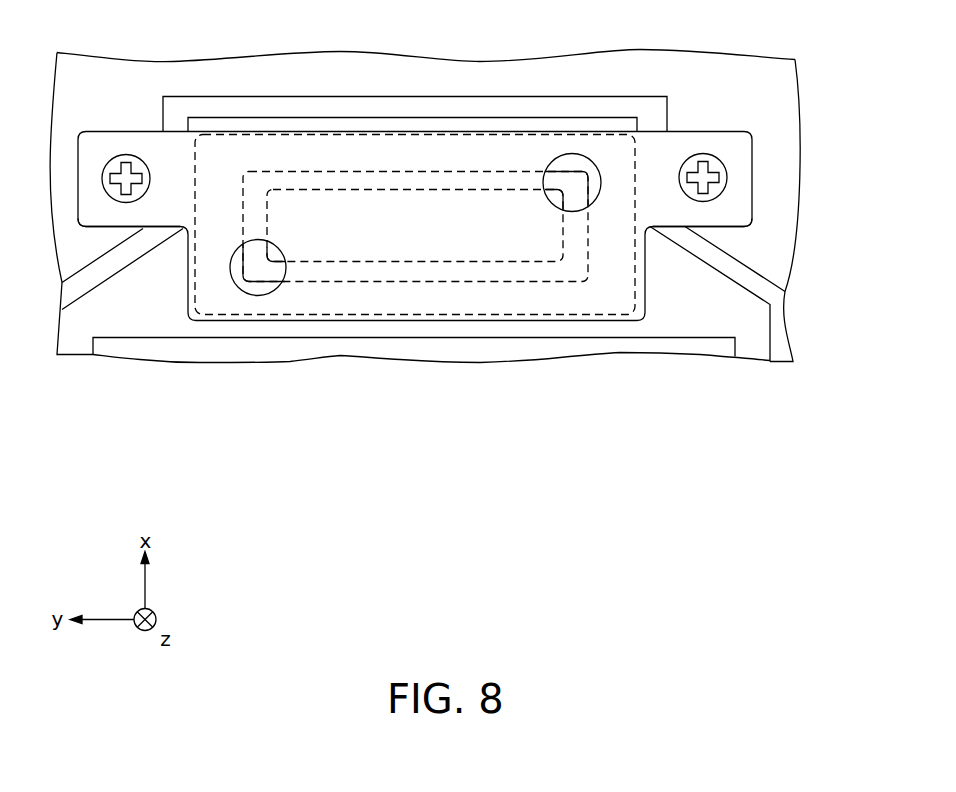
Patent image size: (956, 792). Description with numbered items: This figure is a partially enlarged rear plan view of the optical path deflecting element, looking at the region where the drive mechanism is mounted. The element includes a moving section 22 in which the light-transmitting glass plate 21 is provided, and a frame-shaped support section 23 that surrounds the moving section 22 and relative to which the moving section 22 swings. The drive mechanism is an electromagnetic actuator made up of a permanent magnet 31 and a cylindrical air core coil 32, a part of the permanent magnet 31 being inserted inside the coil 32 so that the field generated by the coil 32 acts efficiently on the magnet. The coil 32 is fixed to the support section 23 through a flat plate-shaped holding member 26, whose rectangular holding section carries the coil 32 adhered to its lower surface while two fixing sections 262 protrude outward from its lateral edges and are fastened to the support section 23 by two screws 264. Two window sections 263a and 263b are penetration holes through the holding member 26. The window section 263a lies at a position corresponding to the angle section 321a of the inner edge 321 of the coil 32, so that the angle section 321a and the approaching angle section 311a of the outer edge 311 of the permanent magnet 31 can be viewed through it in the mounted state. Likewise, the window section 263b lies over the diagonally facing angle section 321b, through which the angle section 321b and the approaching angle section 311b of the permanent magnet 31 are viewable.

The glass plate 21 is at (718, 348).
The moving section 22 is at (740, 315).
The support section 23 is at (778, 182).
The holding member 26 is at (720, 130).
The fixing section 262 is at (90, 210).
The window section 263a is at (236, 244).
The window section 263b is at (594, 210).
The screw 264 is at (126, 155).
The permanent magnet 31 is at (342, 222).
The coil 32 is at (430, 150).
The outer edge of the permanent magnet 311 is at (448, 262).
The angle section of the permanent magnet 311a is at (290, 265).
The angle section of the permanent magnet 311b is at (538, 192).
The inner edge of the coil 321 is at (512, 282).
The angle section of the inner edge of the coil 321a is at (240, 293).
The angle section of the inner edge of the coil 321b is at (589, 166).